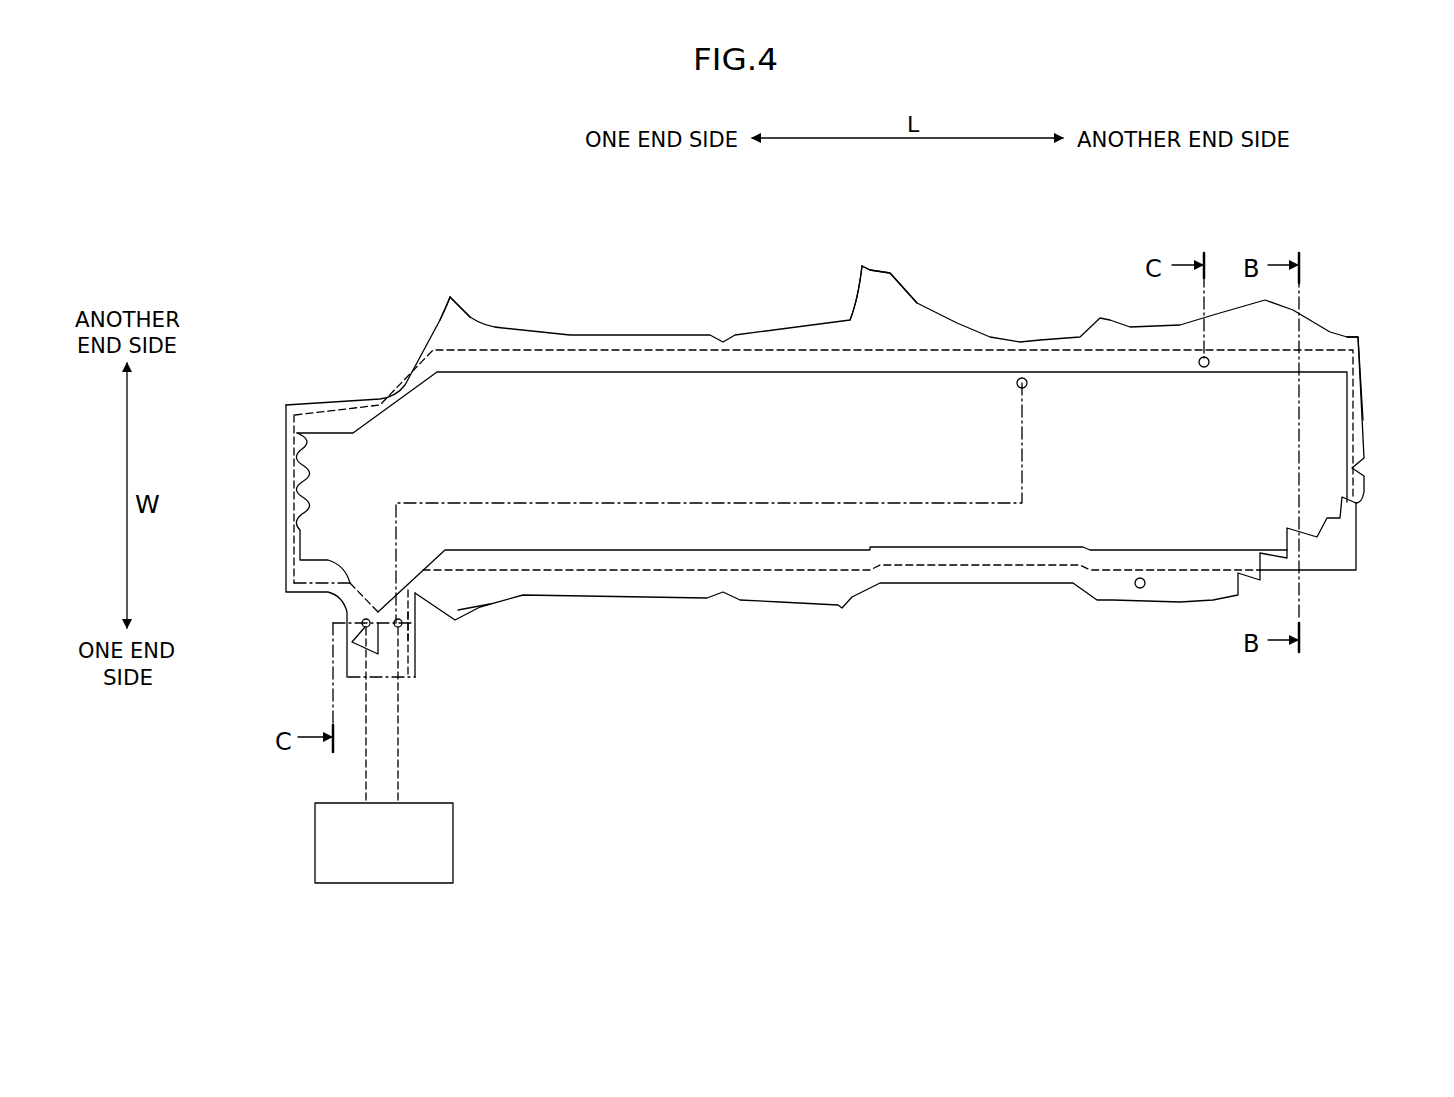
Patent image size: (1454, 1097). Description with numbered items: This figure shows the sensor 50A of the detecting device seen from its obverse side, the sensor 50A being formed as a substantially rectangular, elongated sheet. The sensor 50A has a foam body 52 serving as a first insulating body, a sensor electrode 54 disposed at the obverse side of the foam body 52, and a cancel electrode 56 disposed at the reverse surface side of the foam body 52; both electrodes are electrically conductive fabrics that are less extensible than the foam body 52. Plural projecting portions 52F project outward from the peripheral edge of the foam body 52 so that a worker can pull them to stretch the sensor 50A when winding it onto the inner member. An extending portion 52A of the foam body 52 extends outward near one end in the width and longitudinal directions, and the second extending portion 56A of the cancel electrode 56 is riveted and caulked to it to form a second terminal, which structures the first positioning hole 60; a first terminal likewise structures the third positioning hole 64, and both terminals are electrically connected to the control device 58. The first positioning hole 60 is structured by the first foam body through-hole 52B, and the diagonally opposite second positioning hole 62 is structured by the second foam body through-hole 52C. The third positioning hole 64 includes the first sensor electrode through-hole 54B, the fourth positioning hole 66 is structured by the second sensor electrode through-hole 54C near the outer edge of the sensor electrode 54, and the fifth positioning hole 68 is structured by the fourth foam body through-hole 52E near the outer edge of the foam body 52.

The sensor 50A is at (1350, 331).
The foam body 52 is at (803, 475).
The extending portion 52A is at (343, 607).
The first foam body through-hole 52B is at (492, 672).
The first positioning hole 60 is at (400, 640).
The second foam body through-hole 52C is at (1248, 274).
The second positioning hole 62 is at (1204, 357).
The fourth foam body through-hole 52E is at (1136, 642).
The fifth positioning hole 68 is at (1140, 590).
The projecting portions 52F is at (452, 300).
The sensor electrode 54 is at (1325, 432).
The first sensor electrode through-hole 54B is at (280, 665).
The third positioning hole 64 is at (366, 623).
The second sensor electrode through-hole 54C is at (1050, 323).
The fourth positioning hole 66 is at (1022, 378).
The cancel electrode 56 is at (1338, 548).
The second extending portion 56A is at (412, 615).
The control device 58 is at (440, 850).